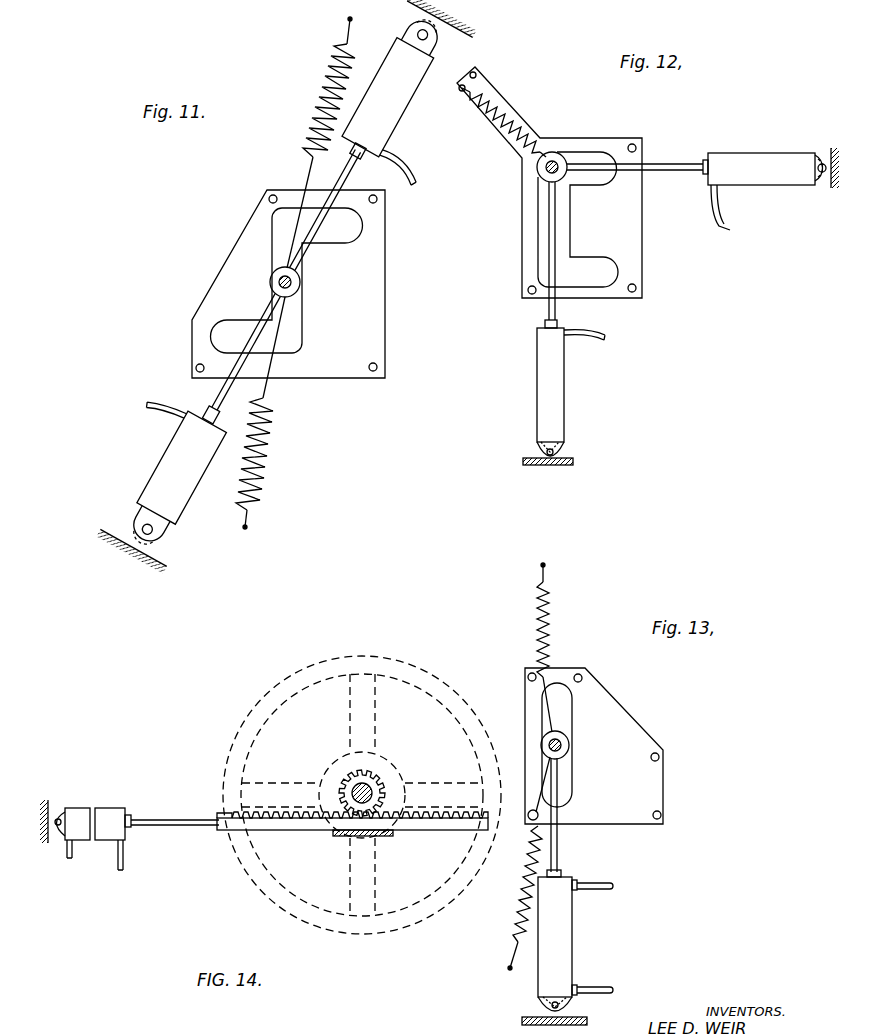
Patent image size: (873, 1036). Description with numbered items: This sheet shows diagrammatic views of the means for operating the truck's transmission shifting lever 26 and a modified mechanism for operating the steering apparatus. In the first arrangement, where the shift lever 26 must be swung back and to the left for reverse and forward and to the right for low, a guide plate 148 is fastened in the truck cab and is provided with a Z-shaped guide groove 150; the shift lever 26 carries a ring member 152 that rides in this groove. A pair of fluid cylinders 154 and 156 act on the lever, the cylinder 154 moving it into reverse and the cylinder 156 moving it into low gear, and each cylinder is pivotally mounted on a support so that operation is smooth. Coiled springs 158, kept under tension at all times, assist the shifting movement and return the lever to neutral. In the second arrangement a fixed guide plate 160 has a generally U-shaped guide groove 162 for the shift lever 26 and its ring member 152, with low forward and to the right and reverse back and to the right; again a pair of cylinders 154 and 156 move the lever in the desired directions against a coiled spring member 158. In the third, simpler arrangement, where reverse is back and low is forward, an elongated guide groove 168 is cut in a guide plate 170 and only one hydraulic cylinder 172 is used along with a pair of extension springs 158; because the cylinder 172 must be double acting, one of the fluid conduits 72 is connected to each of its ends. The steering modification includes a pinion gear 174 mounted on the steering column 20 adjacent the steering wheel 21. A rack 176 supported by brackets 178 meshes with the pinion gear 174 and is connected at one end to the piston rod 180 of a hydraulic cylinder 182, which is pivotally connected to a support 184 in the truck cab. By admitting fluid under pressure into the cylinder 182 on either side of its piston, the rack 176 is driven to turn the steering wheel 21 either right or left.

In FIG. 14, the steering mechanism 20 is at (373, 787).
In FIG. 14, the wheel 21 is at (281, 688).
In FIG. 11, the shifting lever 26 is at (291, 282).
In FIG. 12, the shifting lever 26 is at (556, 158).
In FIG. 13, the shifting lever 26 is at (561, 743).
In FIG. 11, the fluid conduits 72 is at (418, 170).
In FIG. 12, the fluid conduits 72 is at (727, 231).
In FIG. 13, the fluid conduits 72 is at (611, 893).
In FIG. 14, the fluid conduits 72 is at (116, 860).
In FIG. 11, the guide plate 148 is at (225, 272).
In FIG. 11, the Z-shaped guide groove 150 is at (275, 230).
In FIG. 11, the ring member 152 is at (300, 295).
In FIG. 12, the ring member 152 is at (537, 173).
In FIG. 13, the ring member 152 is at (567, 760).
In FIG. 11, the fluid cylinder 154 is at (177, 452).
In FIG. 12, the fluid cylinder 154 is at (560, 402).
In FIG. 11, the fluid cylinder 156 is at (400, 117).
In FIG. 12, the fluid cylinder 156 is at (781, 186).
In FIG. 11, the coiled springs 158 is at (310, 125).
In FIG. 12, the coiled springs 158 is at (505, 112).
In FIG. 13, the coiled springs 158 is at (540, 623).
In FIG. 12, the fixed guide plate 160 is at (527, 222).
In FIG. 12, the U-shaped guide groove 162 is at (570, 233).
In FIG. 13, the elongated guide groove 168 is at (572, 708).
In FIG. 13, the guide plate 170 is at (650, 790).
In FIG. 13, the hydraulic cylinder 172 is at (563, 942).
In FIG. 14, the pinion gear 174 is at (347, 777).
In FIG. 14, the rack 176 is at (310, 824).
In FIG. 14, the brackets 178 is at (377, 836).
In FIG. 14, the piston rod 180 is at (188, 824).
In FIG. 14, the hydraulic cylinder 182 is at (110, 807).
In FIG. 14, the support 184 is at (50, 797).